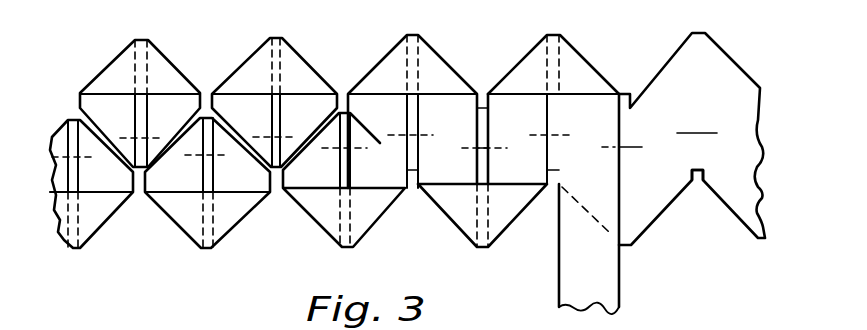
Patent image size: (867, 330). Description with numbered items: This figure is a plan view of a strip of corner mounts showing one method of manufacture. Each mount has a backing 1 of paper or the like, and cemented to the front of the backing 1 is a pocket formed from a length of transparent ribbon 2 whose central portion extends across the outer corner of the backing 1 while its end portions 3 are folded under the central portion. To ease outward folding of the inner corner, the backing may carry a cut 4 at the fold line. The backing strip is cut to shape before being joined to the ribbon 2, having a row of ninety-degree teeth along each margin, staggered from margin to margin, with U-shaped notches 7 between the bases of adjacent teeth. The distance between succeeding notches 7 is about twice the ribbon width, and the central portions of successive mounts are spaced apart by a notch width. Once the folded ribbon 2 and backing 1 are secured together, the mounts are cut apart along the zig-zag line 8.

The backing 1 is at (140, 167).
The ribbon 2 is at (163, 70).
The end portions 3 is at (140, 130).
The cut 4 is at (277, 137).
The U-shaped notches 7 is at (695, 177).
The zig-zag line 8 is at (372, 132).